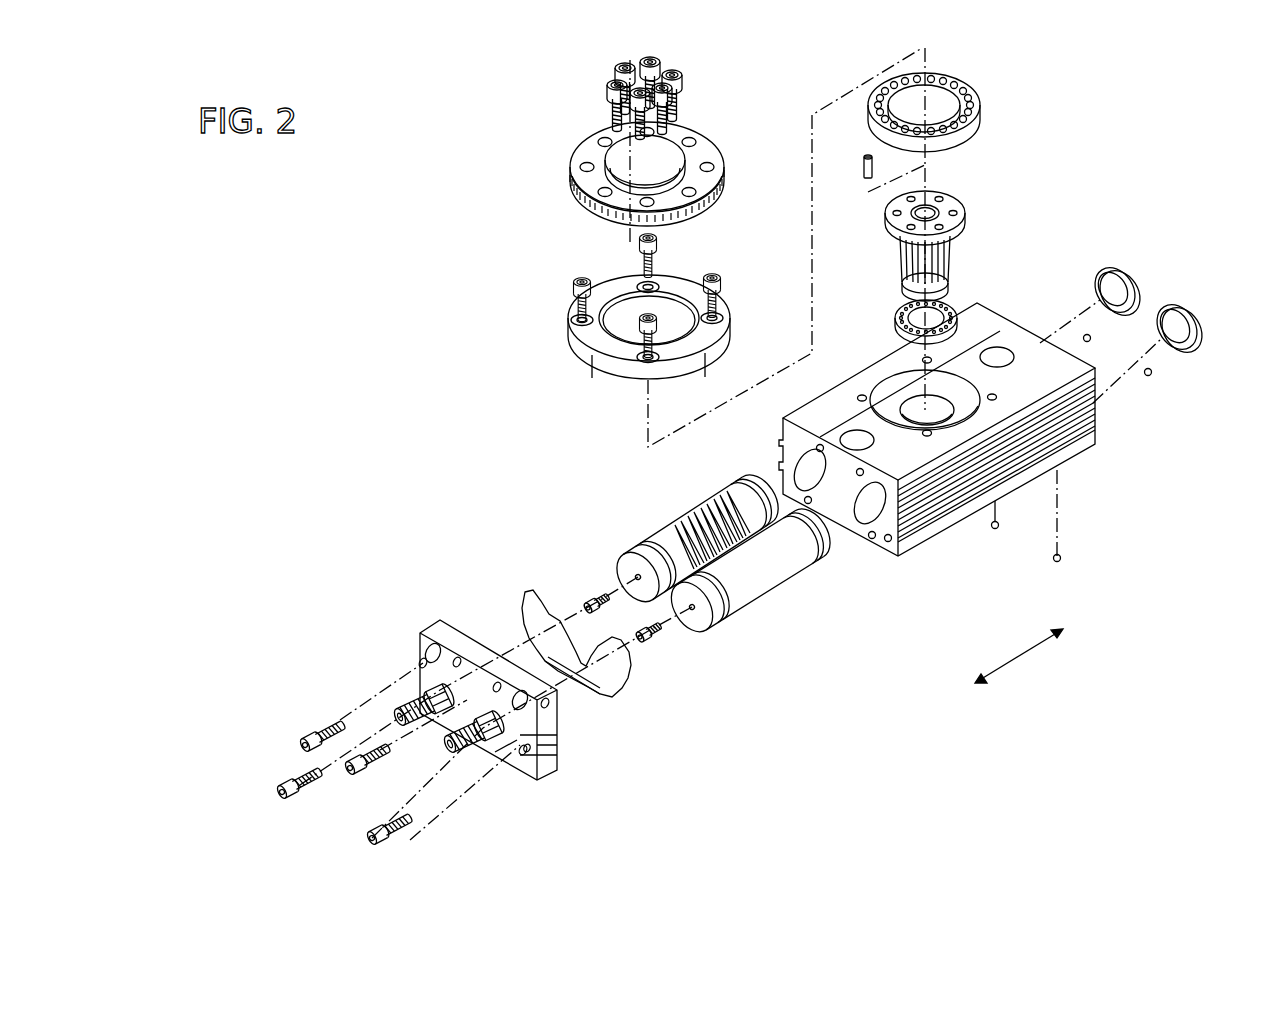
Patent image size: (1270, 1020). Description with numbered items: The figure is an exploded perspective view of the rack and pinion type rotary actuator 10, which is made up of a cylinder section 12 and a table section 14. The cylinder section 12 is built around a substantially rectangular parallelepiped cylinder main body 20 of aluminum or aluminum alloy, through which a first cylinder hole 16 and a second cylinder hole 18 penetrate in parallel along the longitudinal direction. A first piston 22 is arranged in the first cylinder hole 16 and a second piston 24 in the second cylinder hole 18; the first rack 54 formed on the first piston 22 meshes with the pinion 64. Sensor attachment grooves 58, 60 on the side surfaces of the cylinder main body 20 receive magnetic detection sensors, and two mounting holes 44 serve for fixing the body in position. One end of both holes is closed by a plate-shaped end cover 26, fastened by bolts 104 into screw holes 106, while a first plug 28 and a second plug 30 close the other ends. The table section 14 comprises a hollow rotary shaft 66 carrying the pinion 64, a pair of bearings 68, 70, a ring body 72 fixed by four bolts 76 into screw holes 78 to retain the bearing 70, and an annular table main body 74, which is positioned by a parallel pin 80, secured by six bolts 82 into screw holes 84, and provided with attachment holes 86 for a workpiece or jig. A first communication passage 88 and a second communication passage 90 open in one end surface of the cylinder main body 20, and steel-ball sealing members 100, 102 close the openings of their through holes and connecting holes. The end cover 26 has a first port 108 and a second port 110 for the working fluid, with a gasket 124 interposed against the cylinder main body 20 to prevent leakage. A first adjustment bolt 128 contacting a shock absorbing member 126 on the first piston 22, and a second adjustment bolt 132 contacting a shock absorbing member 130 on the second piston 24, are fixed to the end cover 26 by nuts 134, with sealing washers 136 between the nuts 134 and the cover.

The rotary actuator 10 is at (297, 207).
The cylinder section 12 is at (1180, 271).
The table section 14 is at (551, 100).
The first cylinder hole 16 is at (797, 462).
The second cylinder hole 18 is at (868, 522).
The cylinder main body 20 is at (1075, 448).
The first piston 22 is at (663, 537).
The second piston 24 is at (758, 592).
The end cover 26 is at (550, 758).
The first plug 28 is at (1118, 270).
The second plug 30 is at (1195, 313).
The mounting holes 44 is at (1000, 350).
The first rack 54 is at (702, 535).
The sensor attachment groove 58 is at (817, 447).
The sensor attachment groove 60 is at (950, 486).
The pinion 64 is at (898, 262).
The rotary shaft 66 is at (886, 217).
The bearing 68 is at (896, 312).
The bearing 70 is at (978, 108).
The ring body 72 is at (590, 354).
The table main body 74 is at (582, 207).
The bolts 76 is at (576, 282).
The screw holes 78 is at (862, 394).
The parallel pin 80 is at (862, 168).
The bolts 82 is at (614, 72).
The screw holes 84 is at (948, 202).
The attachment holes 86 is at (583, 165).
The first communication passage 88 is at (810, 508).
The second communication passage 90 is at (874, 541).
The sealing members 100 is at (1154, 374).
The sealing members 102 is at (1062, 559).
The bolts 104 is at (372, 835).
The screw holes 106 is at (892, 541).
The first port 108 is at (425, 651).
The second port 110 is at (518, 692).
The gasket 124 is at (636, 685).
The shock absorbing member 126 is at (593, 598).
The first adjustment bolt 128 is at (400, 709).
The shock absorbing member 130 is at (660, 638).
The second adjustment bolt 132 is at (475, 738).
The nuts 134 is at (505, 756).
The sealing washers 136 is at (530, 752).